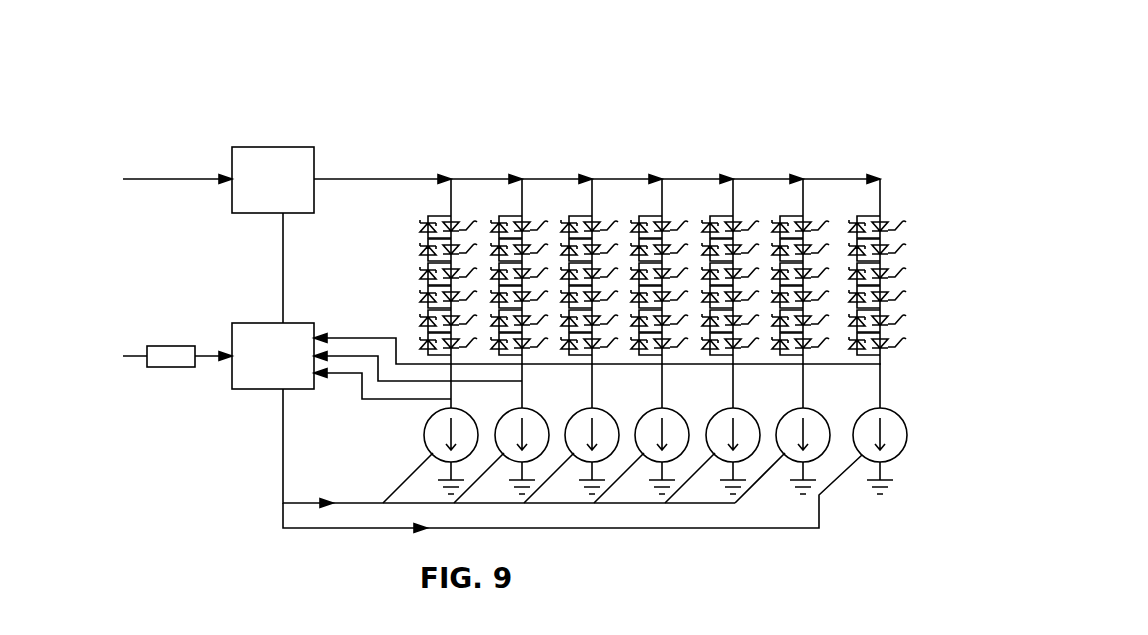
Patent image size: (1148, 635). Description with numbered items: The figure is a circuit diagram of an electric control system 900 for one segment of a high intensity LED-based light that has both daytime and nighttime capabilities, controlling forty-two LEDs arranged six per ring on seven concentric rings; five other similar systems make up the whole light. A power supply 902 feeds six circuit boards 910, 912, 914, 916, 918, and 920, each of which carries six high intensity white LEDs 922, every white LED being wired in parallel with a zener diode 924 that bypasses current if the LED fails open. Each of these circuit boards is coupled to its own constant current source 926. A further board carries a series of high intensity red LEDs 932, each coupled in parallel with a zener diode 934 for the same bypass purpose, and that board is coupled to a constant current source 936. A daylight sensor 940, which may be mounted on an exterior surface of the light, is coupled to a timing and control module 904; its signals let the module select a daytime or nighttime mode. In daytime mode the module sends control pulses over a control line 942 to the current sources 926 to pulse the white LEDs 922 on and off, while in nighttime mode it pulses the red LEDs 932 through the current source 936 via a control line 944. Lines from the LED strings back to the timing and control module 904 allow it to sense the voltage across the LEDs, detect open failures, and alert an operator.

The electric control system 900 is at (738, 57).
The power supply 902 is at (254, 147).
The timing and control module 904 is at (255, 323).
The circuit board 910 is at (451, 179).
The circuit board 912 is at (522, 179).
The circuit board 914 is at (592, 179).
The circuit board 916 is at (662, 179).
The circuit board 918 is at (733, 179).
The circuit board 920 is at (803, 179).
The white LED 922 is at (460, 222).
The zener diode 924 is at (427, 237).
The constant current source 926 is at (428, 425).
The red LED 932 is at (890, 222).
The zener diode 934 is at (851, 215).
The constant current source 936 is at (900, 455).
The daylight sensor 940 is at (163, 346).
The control line 942 is at (362, 503).
The control line 944 is at (630, 530).